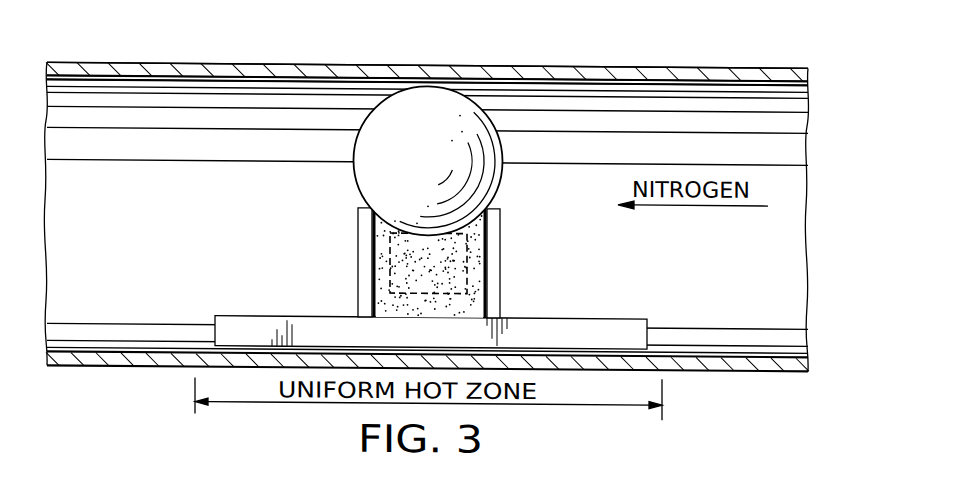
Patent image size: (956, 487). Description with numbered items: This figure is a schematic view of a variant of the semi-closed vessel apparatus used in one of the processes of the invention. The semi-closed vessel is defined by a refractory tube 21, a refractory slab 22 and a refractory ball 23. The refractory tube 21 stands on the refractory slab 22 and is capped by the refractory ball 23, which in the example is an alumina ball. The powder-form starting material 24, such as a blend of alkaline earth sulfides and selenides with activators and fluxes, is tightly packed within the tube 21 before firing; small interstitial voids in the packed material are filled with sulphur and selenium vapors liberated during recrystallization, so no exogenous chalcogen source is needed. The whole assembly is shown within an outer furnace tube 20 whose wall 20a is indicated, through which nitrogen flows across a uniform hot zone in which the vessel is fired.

The furnace tube 20 is at (150, 366).
The tube wall 20a is at (706, 56).
The refractory tube 21 is at (492, 260).
The refractory slab 22 is at (553, 324).
The refractory ball 23 is at (363, 175).
The powder / packing material 24 is at (383, 270).